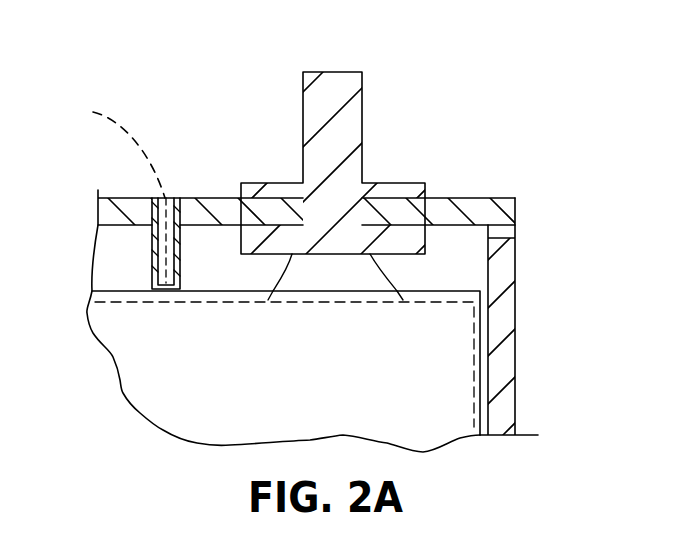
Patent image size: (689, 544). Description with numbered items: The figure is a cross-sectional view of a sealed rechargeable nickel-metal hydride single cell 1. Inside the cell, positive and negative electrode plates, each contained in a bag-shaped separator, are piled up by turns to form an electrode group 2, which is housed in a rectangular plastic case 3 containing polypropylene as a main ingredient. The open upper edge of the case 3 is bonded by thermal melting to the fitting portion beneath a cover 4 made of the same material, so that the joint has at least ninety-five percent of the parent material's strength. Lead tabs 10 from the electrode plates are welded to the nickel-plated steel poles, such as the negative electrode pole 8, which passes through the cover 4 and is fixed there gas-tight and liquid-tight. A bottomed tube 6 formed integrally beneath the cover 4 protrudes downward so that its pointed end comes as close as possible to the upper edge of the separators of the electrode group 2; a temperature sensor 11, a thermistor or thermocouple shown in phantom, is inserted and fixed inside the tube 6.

The single cell 1 is at (369, 273).
The electrode group 2 is at (207, 375).
The case 3 is at (503, 348).
The cover 4 is at (207, 197).
The tube 6 is at (150, 265).
The negative electrode pole 8 is at (353, 113).
The lead tab 10 is at (367, 281).
The temperature sensor 11 is at (115, 125).